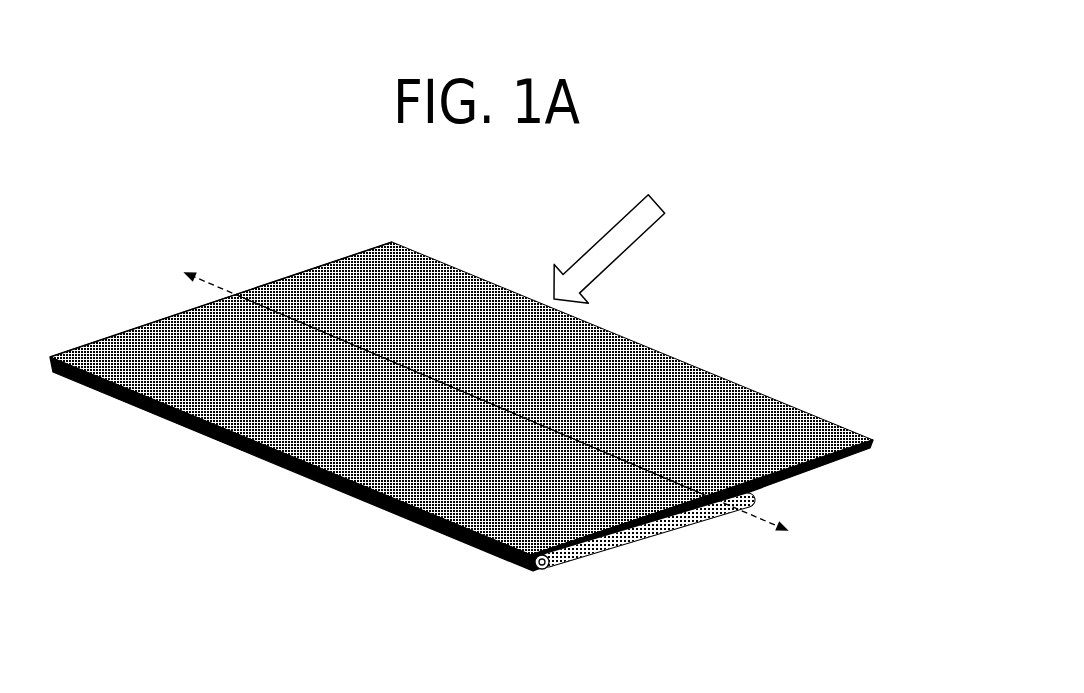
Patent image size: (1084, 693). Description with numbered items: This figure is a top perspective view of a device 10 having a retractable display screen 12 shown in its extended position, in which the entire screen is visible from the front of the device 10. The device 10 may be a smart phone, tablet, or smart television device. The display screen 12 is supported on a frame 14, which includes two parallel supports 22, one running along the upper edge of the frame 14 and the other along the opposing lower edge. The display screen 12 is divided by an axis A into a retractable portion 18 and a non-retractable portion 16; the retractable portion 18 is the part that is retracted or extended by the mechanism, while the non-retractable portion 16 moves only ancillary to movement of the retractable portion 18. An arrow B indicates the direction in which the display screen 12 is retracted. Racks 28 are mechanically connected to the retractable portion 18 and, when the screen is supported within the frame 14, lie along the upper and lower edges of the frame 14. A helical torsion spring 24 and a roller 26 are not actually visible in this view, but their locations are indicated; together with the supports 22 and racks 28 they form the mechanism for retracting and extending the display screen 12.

The device 10 is at (478, 383).
The retractable display screen 12 is at (478, 378).
The frame 14 is at (612, 540).
The non-retractable portion 16 is at (307, 405).
The retractable portion 18 is at (613, 352).
The support 22 is at (590, 558).
The helical torsion spring 24 is at (679, 443).
The roller 26 is at (345, 493).
The rack 28 is at (357, 255).
The axis A is at (748, 517).
The arrow B is at (668, 216).